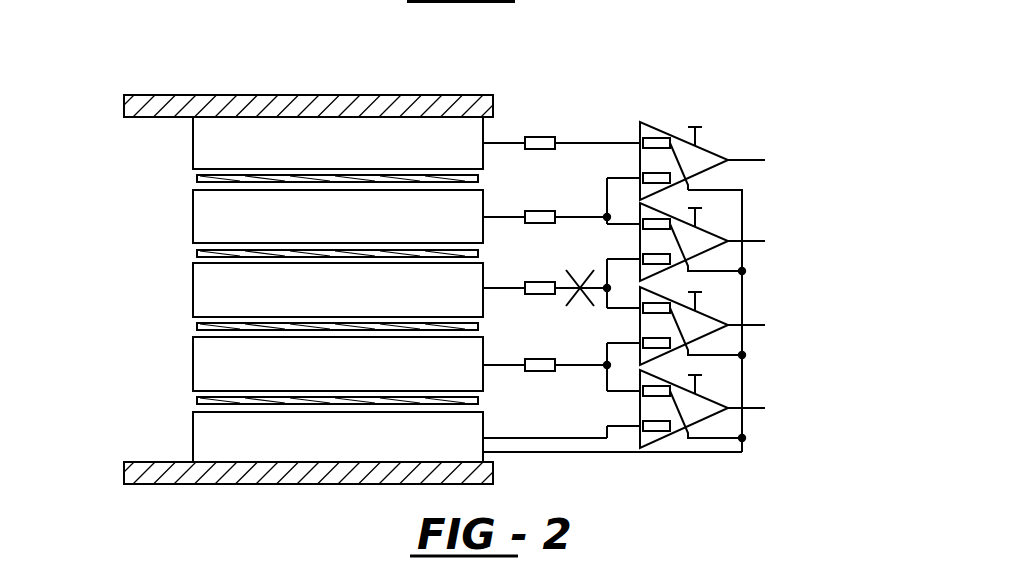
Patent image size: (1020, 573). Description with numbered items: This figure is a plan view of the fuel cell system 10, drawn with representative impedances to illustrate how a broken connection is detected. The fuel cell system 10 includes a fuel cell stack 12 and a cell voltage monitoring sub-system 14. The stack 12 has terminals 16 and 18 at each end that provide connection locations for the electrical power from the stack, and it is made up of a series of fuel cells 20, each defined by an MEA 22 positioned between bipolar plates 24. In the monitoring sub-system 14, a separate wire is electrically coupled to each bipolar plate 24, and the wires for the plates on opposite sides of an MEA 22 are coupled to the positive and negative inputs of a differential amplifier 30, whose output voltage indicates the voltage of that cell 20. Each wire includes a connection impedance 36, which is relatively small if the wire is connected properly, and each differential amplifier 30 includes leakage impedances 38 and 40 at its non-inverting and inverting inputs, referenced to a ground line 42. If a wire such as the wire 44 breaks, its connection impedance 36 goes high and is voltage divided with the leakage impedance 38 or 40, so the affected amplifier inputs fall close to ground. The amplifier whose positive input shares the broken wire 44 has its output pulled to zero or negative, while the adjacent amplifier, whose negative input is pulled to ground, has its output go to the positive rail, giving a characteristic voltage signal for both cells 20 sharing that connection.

The fuel cell system 10 is at (547, 66).
The fuel cell stack 12 is at (158, 228).
The cell voltage monitoring sub-system 14 is at (719, 72).
The terminal 16 is at (352, 105).
The terminal 18 is at (142, 470).
The fuel cell 20 is at (186, 254).
The MEA 22 is at (200, 181).
The bipolar plate 24 is at (210, 146).
The differential amplifier 30 is at (690, 168).
The connection impedance 36 is at (556, 372).
The leakage impedance 38 is at (658, 138).
The leakage impedance 40 is at (695, 163).
The ground line 42 is at (742, 300).
The wire 44 is at (572, 276).